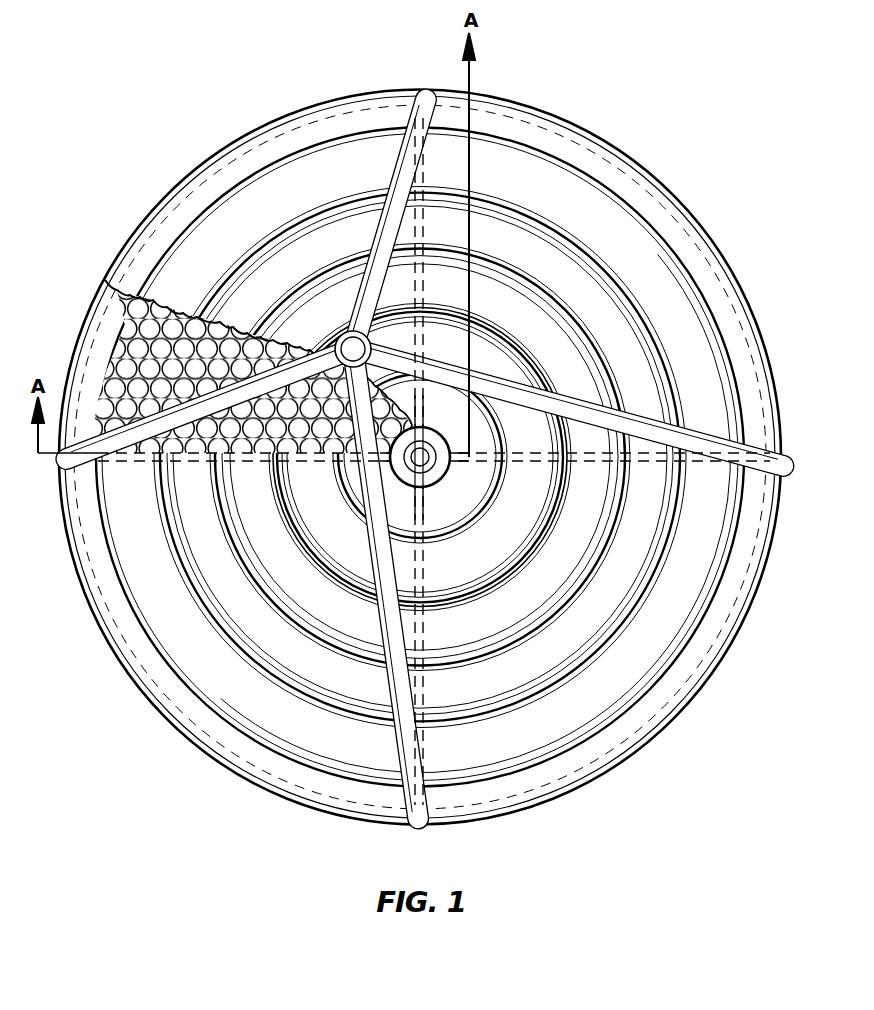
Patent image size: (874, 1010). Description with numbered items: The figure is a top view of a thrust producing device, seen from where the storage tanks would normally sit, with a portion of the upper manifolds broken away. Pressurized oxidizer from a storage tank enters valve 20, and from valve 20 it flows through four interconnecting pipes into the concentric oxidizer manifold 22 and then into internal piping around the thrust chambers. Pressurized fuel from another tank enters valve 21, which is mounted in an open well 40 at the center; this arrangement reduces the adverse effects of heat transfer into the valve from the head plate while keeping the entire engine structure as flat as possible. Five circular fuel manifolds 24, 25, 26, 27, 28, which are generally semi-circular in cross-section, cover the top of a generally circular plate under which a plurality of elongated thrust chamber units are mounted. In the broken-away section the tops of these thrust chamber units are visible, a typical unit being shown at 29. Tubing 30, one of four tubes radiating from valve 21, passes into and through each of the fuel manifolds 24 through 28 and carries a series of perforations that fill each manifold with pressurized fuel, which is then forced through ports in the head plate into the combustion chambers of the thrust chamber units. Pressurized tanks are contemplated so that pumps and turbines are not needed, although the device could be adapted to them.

The valve 20 is at (360, 348).
The valve 21 is at (423, 450).
The concentric oxidizer manifold 22 is at (128, 257).
The circular fuel manifold 24 is at (420, 456).
The circular fuel manifold 25 is at (420, 456).
The circular fuel manifold 26 is at (420, 456).
The circular fuel manifold 27 is at (420, 457).
The circular fuel manifold 28 is at (420, 457).
The thrust chamber unit 29 is at (143, 447).
The tubing 30 is at (321, 457).
The open well 40 is at (428, 478).